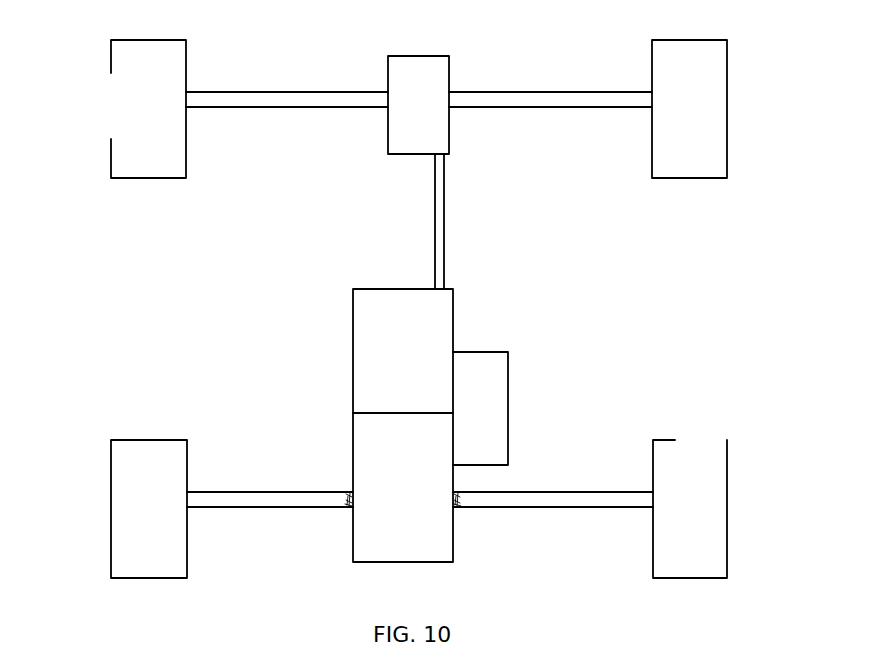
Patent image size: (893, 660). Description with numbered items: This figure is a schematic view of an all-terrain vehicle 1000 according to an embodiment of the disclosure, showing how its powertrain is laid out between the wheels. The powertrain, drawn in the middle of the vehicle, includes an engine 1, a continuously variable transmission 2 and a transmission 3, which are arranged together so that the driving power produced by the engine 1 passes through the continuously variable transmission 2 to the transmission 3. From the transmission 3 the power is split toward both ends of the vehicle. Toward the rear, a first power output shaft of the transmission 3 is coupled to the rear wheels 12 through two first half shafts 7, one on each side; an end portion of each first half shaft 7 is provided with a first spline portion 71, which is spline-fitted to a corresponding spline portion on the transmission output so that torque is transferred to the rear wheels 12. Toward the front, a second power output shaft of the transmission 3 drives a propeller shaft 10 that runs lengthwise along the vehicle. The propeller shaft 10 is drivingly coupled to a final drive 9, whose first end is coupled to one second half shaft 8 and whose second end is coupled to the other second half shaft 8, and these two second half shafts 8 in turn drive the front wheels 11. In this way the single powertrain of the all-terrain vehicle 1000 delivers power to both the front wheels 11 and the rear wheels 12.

The all-terrain vehicle 1000 is at (213, 288).
The engine 1 is at (386, 338).
The continuously variable transmission 2 is at (479, 409).
The transmission 3 is at (372, 467).
The first half shaft 7 is at (268, 491).
The first spline portion 71 is at (458, 508).
The second half shaft 8 is at (288, 91).
The final drive 9 is at (418, 76).
The propeller shaft 10 is at (440, 252).
The front wheels 11 is at (132, 147).
The rear wheels 12 is at (675, 459).